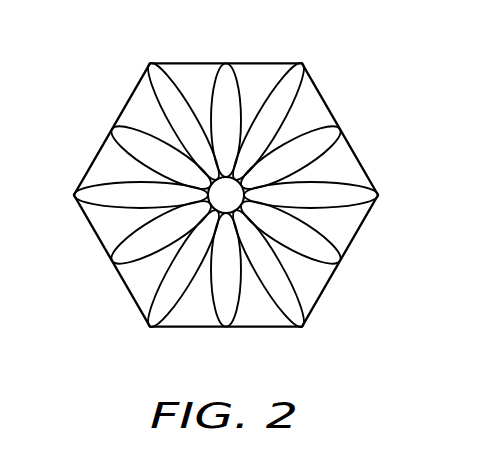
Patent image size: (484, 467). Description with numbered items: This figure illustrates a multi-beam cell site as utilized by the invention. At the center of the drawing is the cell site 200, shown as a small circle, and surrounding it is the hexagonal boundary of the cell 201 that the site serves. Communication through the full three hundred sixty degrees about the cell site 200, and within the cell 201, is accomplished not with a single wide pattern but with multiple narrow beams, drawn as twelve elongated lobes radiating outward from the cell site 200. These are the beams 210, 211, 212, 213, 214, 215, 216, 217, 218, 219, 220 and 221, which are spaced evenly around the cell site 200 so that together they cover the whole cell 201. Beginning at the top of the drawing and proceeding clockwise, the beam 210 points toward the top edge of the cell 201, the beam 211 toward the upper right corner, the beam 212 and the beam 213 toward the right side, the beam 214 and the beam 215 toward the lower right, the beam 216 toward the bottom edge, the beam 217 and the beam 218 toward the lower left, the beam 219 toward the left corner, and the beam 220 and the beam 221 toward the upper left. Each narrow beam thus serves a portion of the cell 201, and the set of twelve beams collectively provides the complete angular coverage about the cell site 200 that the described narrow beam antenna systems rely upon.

The cell site 200 is at (222, 200).
The cell 201 is at (184, 63).
The beam 210 is at (228, 70).
The beam 211 is at (290, 94).
The beam 212 is at (320, 145).
The beam 213 is at (365, 197).
The beam 214 is at (328, 250).
The beam 215 is at (306, 311).
The beam 216 is at (241, 323).
The beam 217 is at (157, 305).
The beam 218 is at (127, 250).
The beam 219 is at (84, 202).
The beam 220 is at (132, 147).
The beam 221 is at (160, 93).